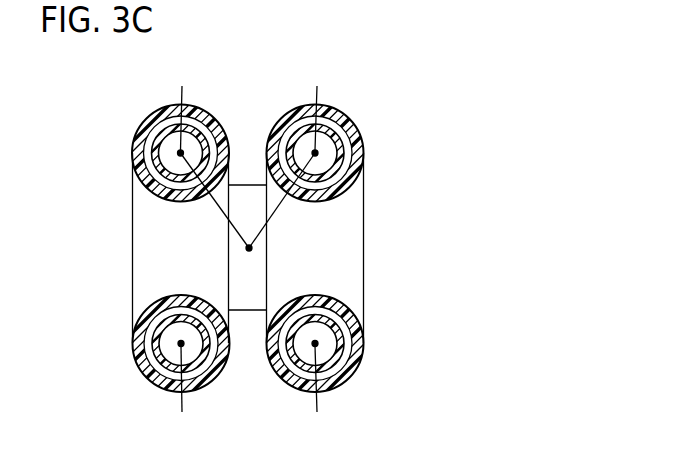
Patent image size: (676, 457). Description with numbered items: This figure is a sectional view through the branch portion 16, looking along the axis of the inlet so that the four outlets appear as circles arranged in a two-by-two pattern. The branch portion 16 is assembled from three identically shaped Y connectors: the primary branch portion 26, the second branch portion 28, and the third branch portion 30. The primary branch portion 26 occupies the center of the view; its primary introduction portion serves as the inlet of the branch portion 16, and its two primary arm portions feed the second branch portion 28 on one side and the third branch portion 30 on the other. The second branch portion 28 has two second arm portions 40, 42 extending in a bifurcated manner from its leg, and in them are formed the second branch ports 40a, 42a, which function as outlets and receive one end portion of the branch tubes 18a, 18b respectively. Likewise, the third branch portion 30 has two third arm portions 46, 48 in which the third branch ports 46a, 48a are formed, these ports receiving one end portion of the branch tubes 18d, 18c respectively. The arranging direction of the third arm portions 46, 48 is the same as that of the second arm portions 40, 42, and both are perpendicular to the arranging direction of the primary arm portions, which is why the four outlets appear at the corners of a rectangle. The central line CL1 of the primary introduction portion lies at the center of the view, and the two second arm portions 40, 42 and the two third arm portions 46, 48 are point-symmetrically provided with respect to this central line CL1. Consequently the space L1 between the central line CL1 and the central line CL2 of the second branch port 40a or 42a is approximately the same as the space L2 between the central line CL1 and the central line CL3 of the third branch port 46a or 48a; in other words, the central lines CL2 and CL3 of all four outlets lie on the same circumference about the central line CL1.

The branch portion 16 is at (270, 251).
The primary branch portion 26 is at (250, 315).
The second branch portion 28 is at (366, 242).
The third branch portion 30 is at (130, 237).
The second arm portion 40 is at (345, 119).
The second branch port 40a is at (345, 168).
The branch tube 18a is at (340, 141).
The second arm portion 42 is at (352, 378).
The second branch port 42a is at (350, 330).
The branch tube 18b is at (342, 356).
The third arm portion 46 is at (152, 119).
The third branch port 46a is at (152, 167).
The branch tube 18d is at (158, 141).
The third arm portion 48 is at (148, 378).
The third branch port 48a is at (151, 330).
The branch tube 18c is at (158, 357).
The central line of the primary introduction portion CL1 is at (251, 260).
The central line of the second branch port CL2 is at (316, 251).
The central line of the third branch port CL3 is at (180, 251).
The space between CL1 and CL2 L1 is at (282, 200).
The space between CL1 and CL3 L2 is at (215, 200).